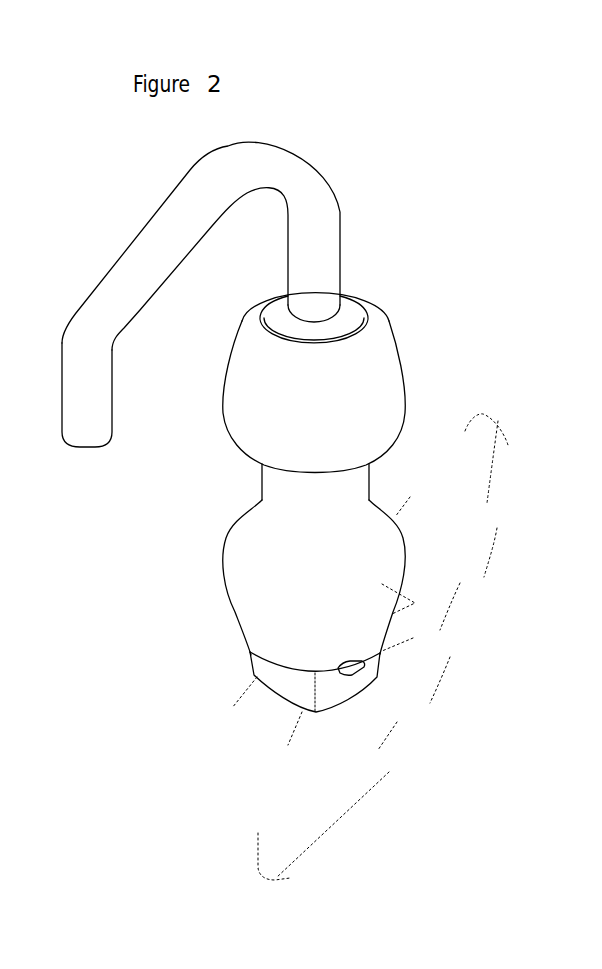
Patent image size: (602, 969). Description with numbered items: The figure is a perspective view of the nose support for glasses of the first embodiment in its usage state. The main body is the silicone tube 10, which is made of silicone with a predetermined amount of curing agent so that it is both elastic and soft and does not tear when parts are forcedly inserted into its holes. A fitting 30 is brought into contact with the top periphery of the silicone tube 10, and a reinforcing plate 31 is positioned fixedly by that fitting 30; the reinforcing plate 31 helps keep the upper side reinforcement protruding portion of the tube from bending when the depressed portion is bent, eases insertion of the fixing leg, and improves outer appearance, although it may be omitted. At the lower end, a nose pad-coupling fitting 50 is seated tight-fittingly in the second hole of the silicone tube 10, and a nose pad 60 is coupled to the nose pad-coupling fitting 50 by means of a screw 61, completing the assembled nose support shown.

The silicone tube 10 is at (437, 357).
The fitting 30 is at (108, 413).
The reinforcing plate 31 is at (352, 308).
The nose pad-coupling fitting 50 is at (268, 672).
The nose pad 60 is at (490, 558).
The screw 61 is at (368, 668).